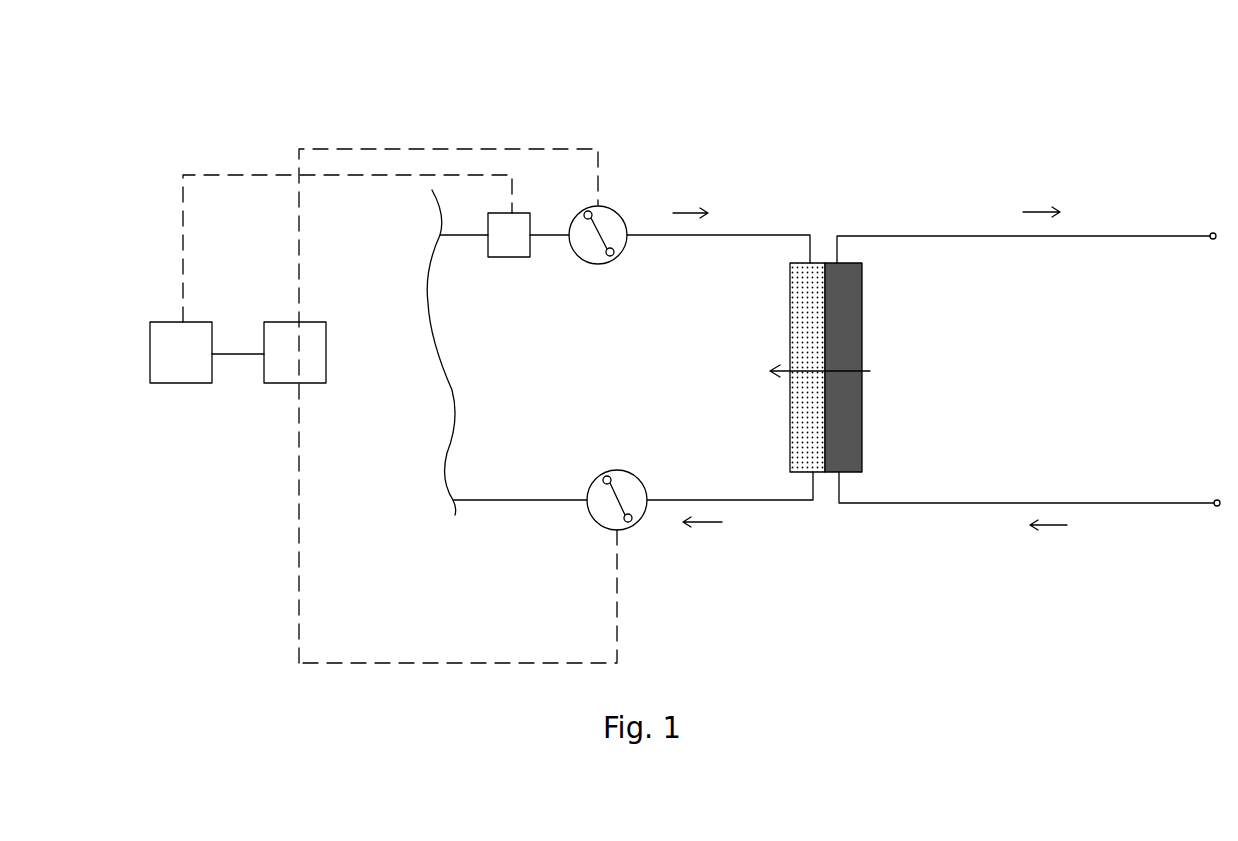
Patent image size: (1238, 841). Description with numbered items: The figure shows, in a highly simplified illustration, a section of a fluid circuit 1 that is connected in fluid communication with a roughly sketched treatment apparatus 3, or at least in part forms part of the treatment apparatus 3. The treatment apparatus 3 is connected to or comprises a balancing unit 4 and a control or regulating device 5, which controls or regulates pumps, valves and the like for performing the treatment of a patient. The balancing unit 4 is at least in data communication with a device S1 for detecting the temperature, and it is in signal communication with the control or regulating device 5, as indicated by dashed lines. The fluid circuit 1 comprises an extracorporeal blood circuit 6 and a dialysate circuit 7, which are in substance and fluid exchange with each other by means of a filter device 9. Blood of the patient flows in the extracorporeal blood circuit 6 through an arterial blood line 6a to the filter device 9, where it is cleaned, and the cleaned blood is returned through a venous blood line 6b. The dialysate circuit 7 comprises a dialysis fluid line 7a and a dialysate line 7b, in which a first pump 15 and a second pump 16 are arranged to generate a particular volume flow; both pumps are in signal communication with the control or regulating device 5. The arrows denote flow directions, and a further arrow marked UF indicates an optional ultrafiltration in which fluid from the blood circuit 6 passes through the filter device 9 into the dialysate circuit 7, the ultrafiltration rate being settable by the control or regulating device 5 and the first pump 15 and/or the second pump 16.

The fluid circuit 1 is at (455, 100).
The treatment apparatus 3 is at (383, 400).
The balancing unit 4 is at (207, 352).
The control or regulating device 5 is at (295, 352).
The device for detecting the temperature S1 is at (509, 235).
The extracorporeal blood circuit 6 is at (1004, 385).
The arterial blood line 6a is at (1123, 504).
The venous blood line 6b is at (1115, 236).
The dialysate circuit 7 is at (626, 369).
The dialysis fluid line 7a is at (743, 235).
The dialysate line 7b is at (758, 502).
The filter device 9 is at (823, 263).
The first pump 15 is at (611, 207).
The second pump 16 is at (616, 469).